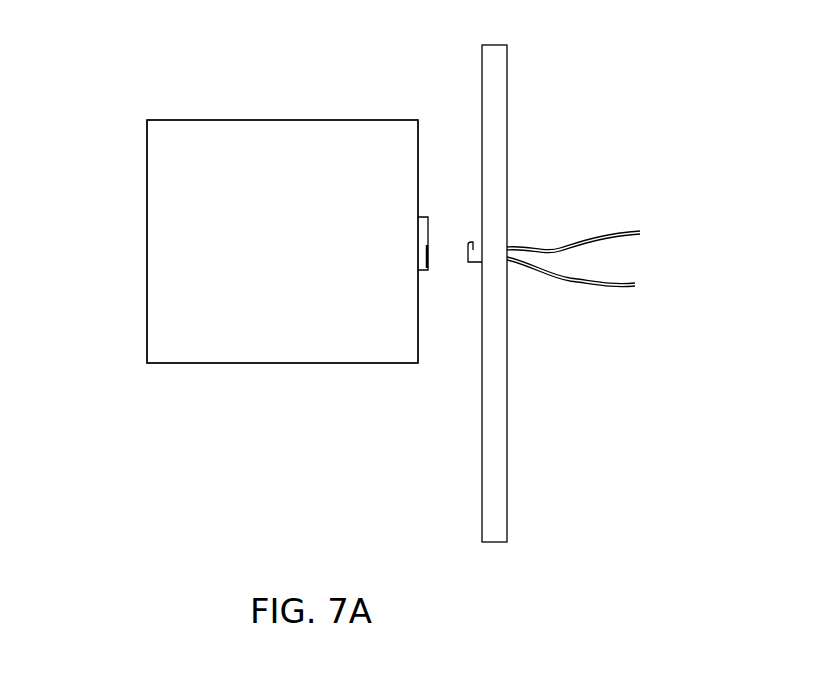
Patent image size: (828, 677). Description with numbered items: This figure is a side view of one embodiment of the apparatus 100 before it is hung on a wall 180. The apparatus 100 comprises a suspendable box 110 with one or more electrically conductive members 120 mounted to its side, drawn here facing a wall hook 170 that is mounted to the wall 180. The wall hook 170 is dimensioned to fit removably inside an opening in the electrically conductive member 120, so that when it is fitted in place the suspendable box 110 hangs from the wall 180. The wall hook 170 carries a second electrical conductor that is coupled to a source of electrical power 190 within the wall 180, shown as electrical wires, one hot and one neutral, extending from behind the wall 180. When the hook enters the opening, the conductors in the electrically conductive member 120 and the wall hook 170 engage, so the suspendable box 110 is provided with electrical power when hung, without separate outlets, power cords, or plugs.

The apparatus 100 is at (196, 84).
The suspendable box 110 is at (305, 258).
The electrically conductive member 120 is at (428, 230).
The wall hook 170 is at (482, 229).
The wall 180 is at (507, 433).
The source of electrical power 190 is at (623, 230).